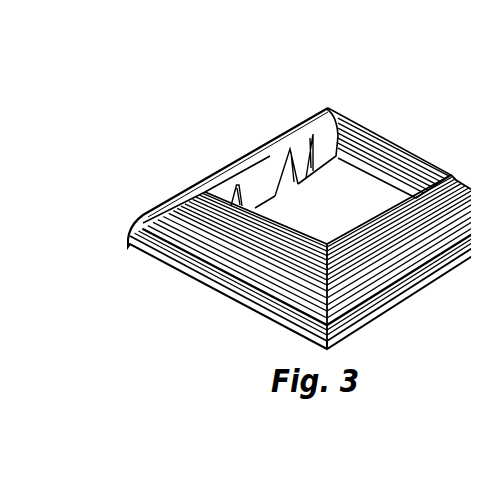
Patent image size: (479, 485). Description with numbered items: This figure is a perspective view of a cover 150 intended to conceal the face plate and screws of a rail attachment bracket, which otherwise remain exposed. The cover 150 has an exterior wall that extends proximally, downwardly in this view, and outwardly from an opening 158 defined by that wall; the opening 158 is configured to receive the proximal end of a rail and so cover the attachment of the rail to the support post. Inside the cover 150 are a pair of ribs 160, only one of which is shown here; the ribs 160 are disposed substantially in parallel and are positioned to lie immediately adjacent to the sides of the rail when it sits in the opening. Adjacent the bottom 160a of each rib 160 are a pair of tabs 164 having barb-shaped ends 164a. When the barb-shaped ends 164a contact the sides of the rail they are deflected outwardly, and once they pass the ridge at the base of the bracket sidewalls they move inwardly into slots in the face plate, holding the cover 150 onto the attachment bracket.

The cover 150 is at (353, 96).
The opening 158 is at (345, 164).
The rib 160 is at (249, 174).
The bottom of rib 160a is at (243, 176).
The tab 164 is at (292, 150).
The barb-shaped end 164a is at (291, 177).